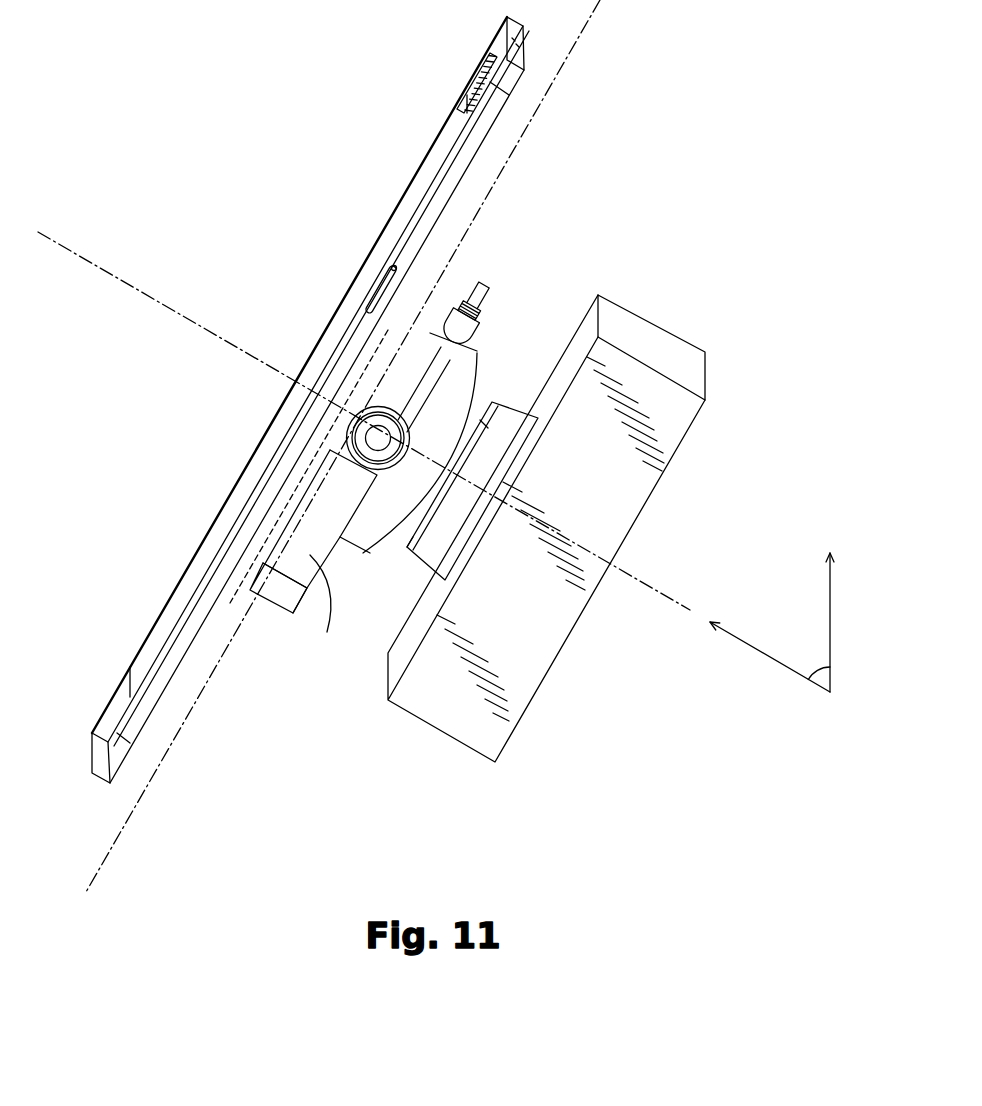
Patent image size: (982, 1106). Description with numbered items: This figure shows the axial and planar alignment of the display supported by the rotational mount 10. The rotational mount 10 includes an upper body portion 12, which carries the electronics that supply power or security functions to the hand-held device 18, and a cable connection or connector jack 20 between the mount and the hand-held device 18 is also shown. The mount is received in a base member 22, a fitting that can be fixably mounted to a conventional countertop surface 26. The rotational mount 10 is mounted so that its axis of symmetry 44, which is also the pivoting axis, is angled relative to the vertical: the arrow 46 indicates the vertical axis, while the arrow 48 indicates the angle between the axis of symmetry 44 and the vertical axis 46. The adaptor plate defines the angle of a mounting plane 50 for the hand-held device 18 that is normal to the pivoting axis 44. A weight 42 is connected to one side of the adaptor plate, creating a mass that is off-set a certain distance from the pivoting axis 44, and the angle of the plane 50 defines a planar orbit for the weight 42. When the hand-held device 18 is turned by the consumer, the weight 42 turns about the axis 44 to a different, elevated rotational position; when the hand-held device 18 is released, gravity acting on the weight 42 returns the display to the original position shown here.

The rotational mount 10 is at (490, 243).
The upper body portion 12 is at (455, 392).
The hand-held device 18 is at (406, 188).
The connector jack 20 is at (492, 277).
The base member 22 is at (494, 455).
The countertop surface 26 is at (434, 711).
The weight 42 is at (308, 557).
The axis of symmetry 44 is at (177, 311).
The vertical axis 46 is at (826, 612).
The angle 48 is at (818, 665).
The mounting plane 50 is at (576, 48).